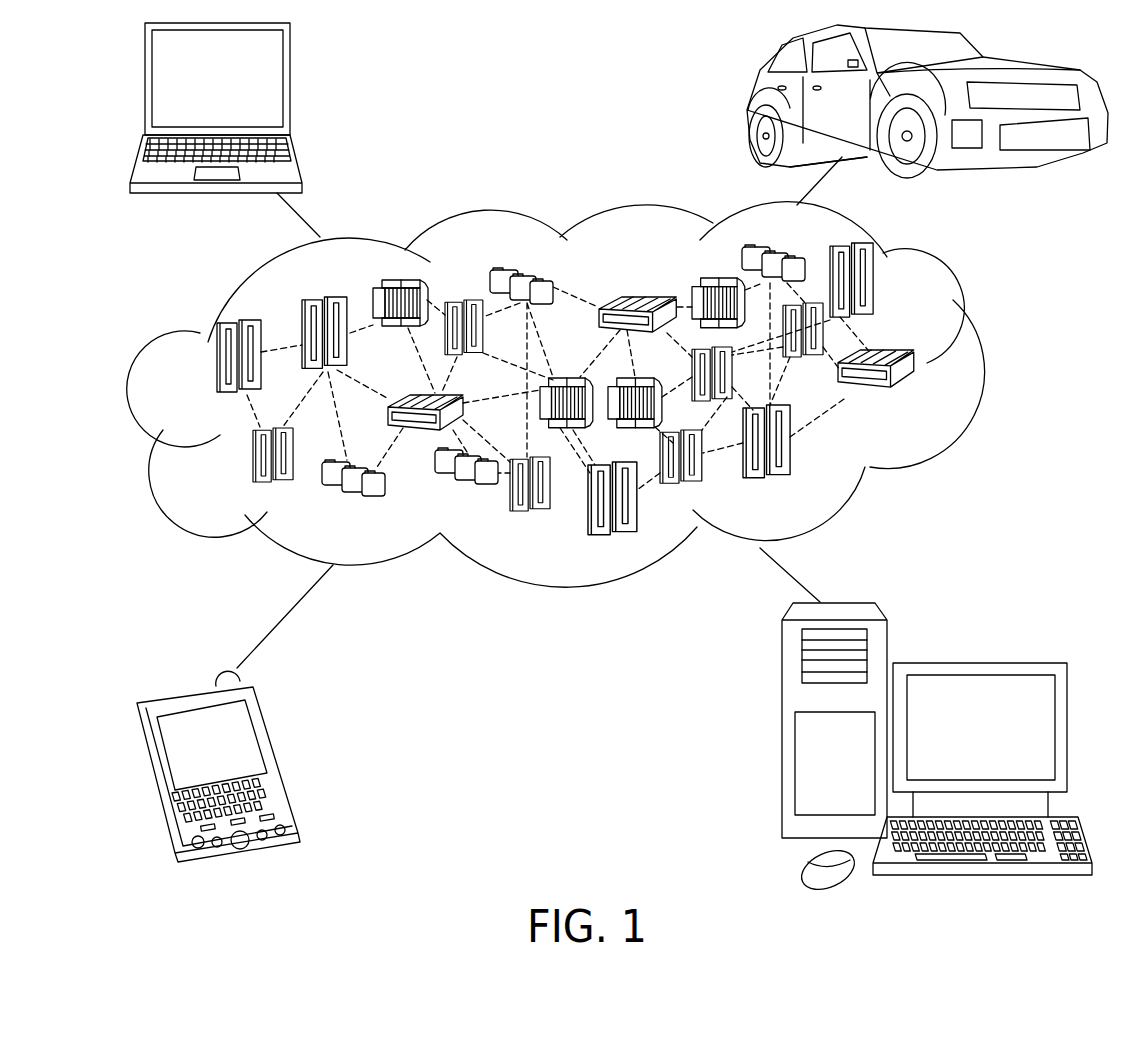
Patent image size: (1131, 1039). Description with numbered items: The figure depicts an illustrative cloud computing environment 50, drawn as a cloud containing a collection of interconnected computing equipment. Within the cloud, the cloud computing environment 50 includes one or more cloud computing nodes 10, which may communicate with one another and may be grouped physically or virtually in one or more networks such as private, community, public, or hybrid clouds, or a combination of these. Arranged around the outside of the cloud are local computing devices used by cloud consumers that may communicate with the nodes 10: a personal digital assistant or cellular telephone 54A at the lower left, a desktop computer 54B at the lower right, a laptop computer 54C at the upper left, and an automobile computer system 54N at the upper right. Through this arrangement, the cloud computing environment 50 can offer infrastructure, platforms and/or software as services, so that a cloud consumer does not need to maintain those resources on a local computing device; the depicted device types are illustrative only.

The cloud computing nodes 10 is at (918, 398).
The cloud computing environment 50 is at (582, 395).
The personal digital assistant (PDA) or cellular telephone 54A is at (277, 757).
The desktop computer 54B is at (977, 662).
The laptop computer 54C is at (290, 85).
The automobile computer system 54N is at (750, 103).